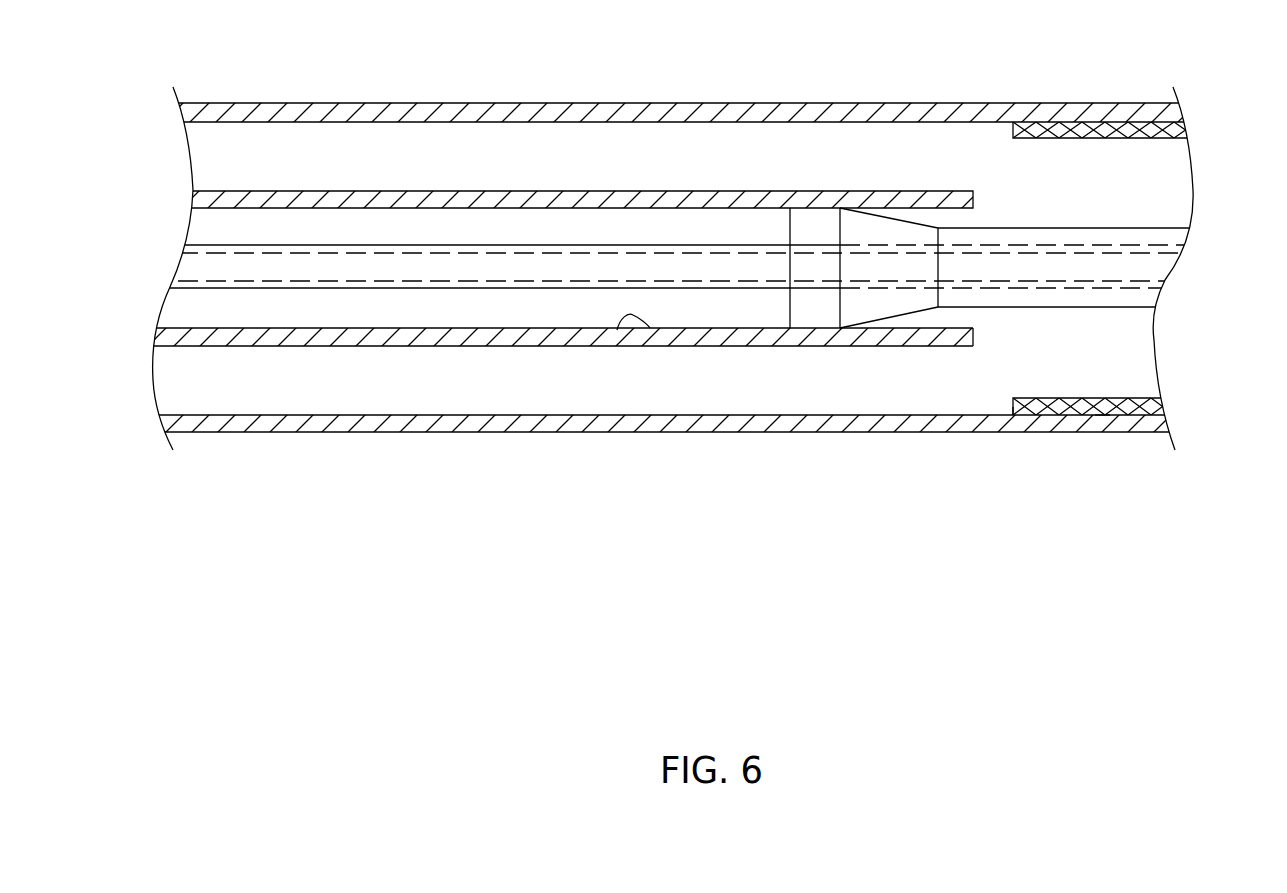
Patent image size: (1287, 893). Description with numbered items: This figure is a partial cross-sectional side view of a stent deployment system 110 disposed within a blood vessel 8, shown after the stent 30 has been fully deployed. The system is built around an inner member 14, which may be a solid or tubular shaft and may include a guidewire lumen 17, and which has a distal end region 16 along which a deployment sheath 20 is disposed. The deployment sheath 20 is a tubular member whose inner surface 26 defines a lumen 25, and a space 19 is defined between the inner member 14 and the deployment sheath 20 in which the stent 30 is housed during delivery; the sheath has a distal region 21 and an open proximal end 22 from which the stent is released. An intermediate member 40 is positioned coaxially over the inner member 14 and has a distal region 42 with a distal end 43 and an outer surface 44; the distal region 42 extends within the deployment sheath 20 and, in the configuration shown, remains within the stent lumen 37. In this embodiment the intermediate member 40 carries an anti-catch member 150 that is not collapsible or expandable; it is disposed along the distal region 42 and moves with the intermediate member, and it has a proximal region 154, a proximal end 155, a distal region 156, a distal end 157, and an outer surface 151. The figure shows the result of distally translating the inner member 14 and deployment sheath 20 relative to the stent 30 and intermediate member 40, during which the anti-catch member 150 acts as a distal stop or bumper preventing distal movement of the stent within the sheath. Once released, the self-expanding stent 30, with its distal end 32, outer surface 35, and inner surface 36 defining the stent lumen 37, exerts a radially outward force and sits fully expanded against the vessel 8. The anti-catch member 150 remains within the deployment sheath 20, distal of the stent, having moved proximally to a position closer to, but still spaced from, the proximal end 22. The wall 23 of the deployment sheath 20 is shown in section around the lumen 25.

The blood vessel 8 is at (224, 103).
The inner member 14 is at (473, 244).
The distal end region 16 is at (417, 244).
The guidewire lumen 17 is at (308, 260).
The space 19 is at (368, 226).
The deployment sheath 20 is at (463, 348).
The distal region 21 is at (903, 348).
The proximal end 22 is at (970, 348).
The wall 23 is at (428, 348).
The lumen 25 is at (355, 307).
The inner surface 26 is at (617, 330).
The stent 30 is at (1138, 417).
The distal end 32 is at (1012, 407).
The outer surface 35 is at (1103, 413).
The inner surface 36 is at (1110, 397).
The stent lumen 37 is at (1063, 348).
The intermediate member 40 is at (1123, 227).
The distal region 42 is at (1063, 227).
The distal end 43 is at (973, 208).
The outer surface 44 is at (1155, 228).
The stent deployment system 110 is at (567, 155).
The anti-catch member 150 is at (893, 224).
The outer surface 151 is at (870, 213).
The proximal region 154 is at (910, 217).
The proximal end 155 is at (947, 227).
The distal region 156 is at (855, 203).
The distal end 157 is at (790, 208).